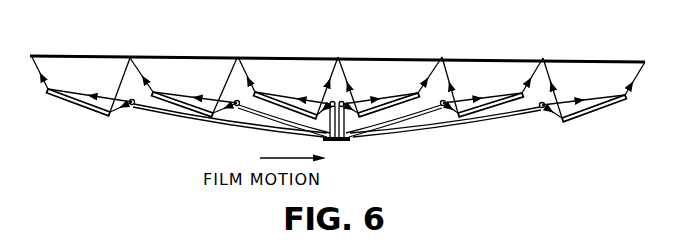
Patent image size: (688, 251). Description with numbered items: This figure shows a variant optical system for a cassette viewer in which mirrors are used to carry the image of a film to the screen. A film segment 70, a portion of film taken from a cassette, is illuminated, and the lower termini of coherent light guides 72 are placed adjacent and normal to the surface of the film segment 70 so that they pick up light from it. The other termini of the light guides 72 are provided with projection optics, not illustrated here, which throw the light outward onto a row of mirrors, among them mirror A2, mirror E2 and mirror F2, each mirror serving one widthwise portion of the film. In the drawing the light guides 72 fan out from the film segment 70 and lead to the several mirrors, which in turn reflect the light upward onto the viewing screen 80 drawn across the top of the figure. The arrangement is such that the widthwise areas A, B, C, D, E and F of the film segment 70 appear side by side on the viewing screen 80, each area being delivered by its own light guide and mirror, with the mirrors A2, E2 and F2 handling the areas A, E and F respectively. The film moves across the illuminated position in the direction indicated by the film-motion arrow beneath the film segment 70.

The film segment 70 is at (338, 141).
The coherent light guides 72 is at (407, 114).
The viewing screen 80 is at (528, 59).
The area A is at (82, 85).
The area B is at (185, 69).
The area C is at (288, 70).
The area D is at (390, 70).
The area E is at (492, 95).
The area F is at (593, 92).
The mirror A2 is at (82, 104).
The mirror E2 is at (497, 106).
The mirror F2 is at (597, 112).